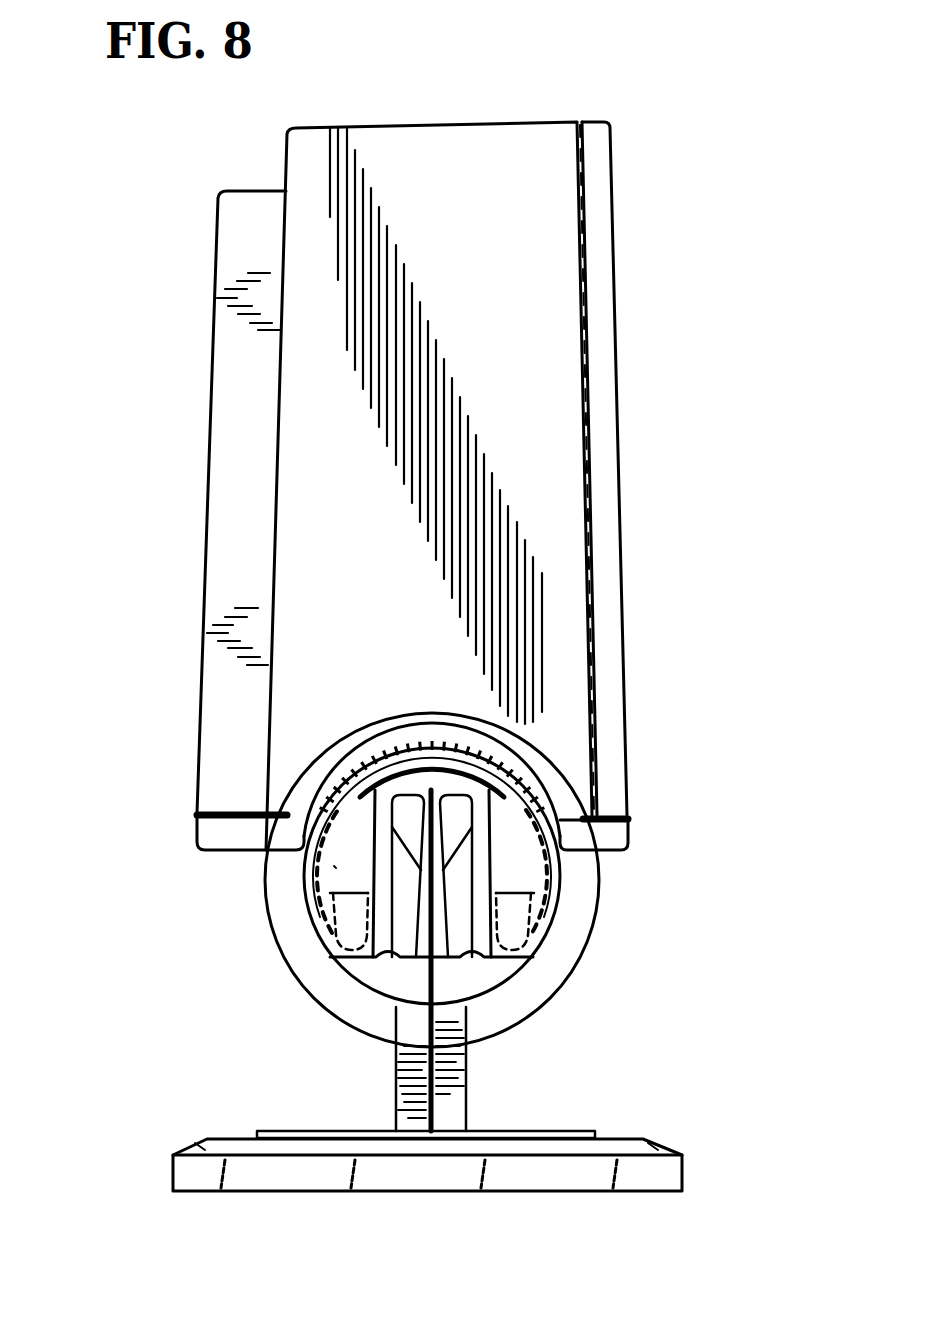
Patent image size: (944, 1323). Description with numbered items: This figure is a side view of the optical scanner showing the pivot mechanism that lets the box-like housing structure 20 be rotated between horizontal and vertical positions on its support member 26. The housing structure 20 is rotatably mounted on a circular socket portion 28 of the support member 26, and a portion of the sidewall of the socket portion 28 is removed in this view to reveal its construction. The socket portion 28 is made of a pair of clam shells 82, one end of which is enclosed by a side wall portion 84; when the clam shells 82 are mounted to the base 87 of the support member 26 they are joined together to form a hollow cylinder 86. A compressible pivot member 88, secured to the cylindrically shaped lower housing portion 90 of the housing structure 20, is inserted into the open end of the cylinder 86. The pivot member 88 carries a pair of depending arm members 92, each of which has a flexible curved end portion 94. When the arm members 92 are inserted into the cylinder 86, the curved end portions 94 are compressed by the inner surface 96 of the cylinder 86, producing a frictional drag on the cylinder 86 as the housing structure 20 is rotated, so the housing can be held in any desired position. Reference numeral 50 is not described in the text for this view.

The housing structure 20 is at (138, 403).
The support member 26 is at (292, 1210).
The socket portion 28 is at (350, 995).
The yoke 50 is at (517, 877).
The clam shells 82 is at (545, 843).
The side wall portion 84 is at (390, 973).
The hollow cylinder 86 is at (543, 917).
The base 87 is at (667, 1150).
The pivot member 88 is at (393, 790).
The lower housing portion 90 is at (550, 1000).
The arm members 92 is at (380, 843).
The curved end portions 94 is at (323, 957).
The inner surface 96 is at (330, 867).